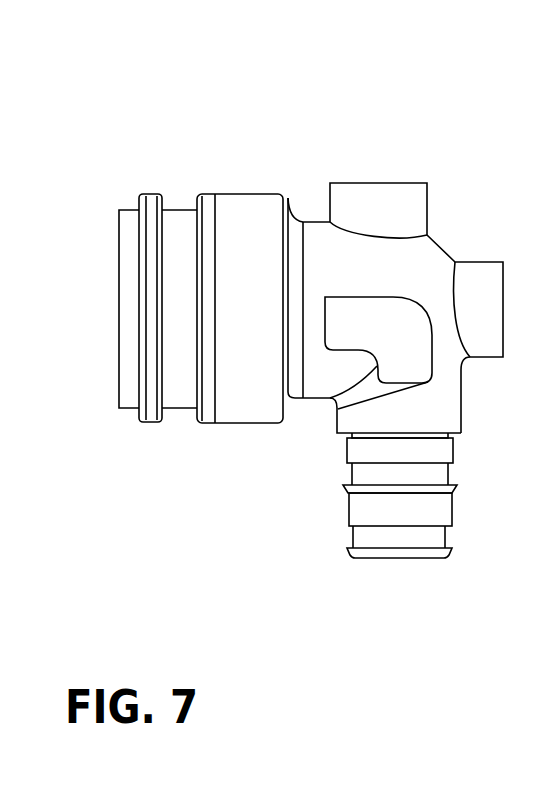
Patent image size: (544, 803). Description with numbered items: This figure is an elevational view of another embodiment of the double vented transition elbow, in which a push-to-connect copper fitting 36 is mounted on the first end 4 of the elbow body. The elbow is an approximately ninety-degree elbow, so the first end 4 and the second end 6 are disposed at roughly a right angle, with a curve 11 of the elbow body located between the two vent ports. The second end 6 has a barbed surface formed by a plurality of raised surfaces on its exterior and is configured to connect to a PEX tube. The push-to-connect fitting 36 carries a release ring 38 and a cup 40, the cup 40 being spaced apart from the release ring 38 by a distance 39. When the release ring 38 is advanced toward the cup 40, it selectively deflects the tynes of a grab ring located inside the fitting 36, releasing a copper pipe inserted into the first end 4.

The first end 4 is at (276, 182).
The second end 6 is at (455, 477).
The curve 11 is at (442, 245).
The push-to-connect copper fitting 36 is at (182, 257).
The release ring 38 is at (152, 208).
The distance 39 is at (174, 210).
The cup 40 is at (232, 193).